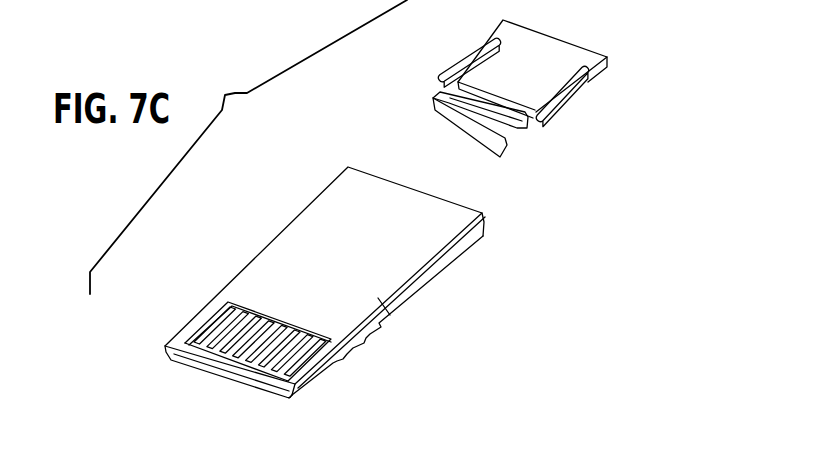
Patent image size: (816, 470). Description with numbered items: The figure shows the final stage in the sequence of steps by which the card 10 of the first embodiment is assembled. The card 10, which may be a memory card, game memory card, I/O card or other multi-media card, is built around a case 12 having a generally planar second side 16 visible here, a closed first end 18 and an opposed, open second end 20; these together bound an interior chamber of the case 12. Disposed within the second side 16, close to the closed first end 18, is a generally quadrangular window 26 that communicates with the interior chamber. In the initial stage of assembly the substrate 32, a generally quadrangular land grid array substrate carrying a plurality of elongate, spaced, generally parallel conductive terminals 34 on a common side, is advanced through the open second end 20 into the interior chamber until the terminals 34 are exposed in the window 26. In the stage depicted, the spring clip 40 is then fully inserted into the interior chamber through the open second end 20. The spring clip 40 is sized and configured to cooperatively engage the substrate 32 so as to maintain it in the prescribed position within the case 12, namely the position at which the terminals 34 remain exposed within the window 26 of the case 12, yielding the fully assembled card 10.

The card 10 is at (283, 193).
The case 12 is at (484, 202).
The second side 16 is at (386, 306).
The closed first end 18 is at (208, 370).
The open second end 20 is at (381, 175).
The window 26 is at (188, 328).
The substrate 32 is at (322, 358).
The terminals 34 is at (230, 334).
The spring clip 40 is at (594, 101).